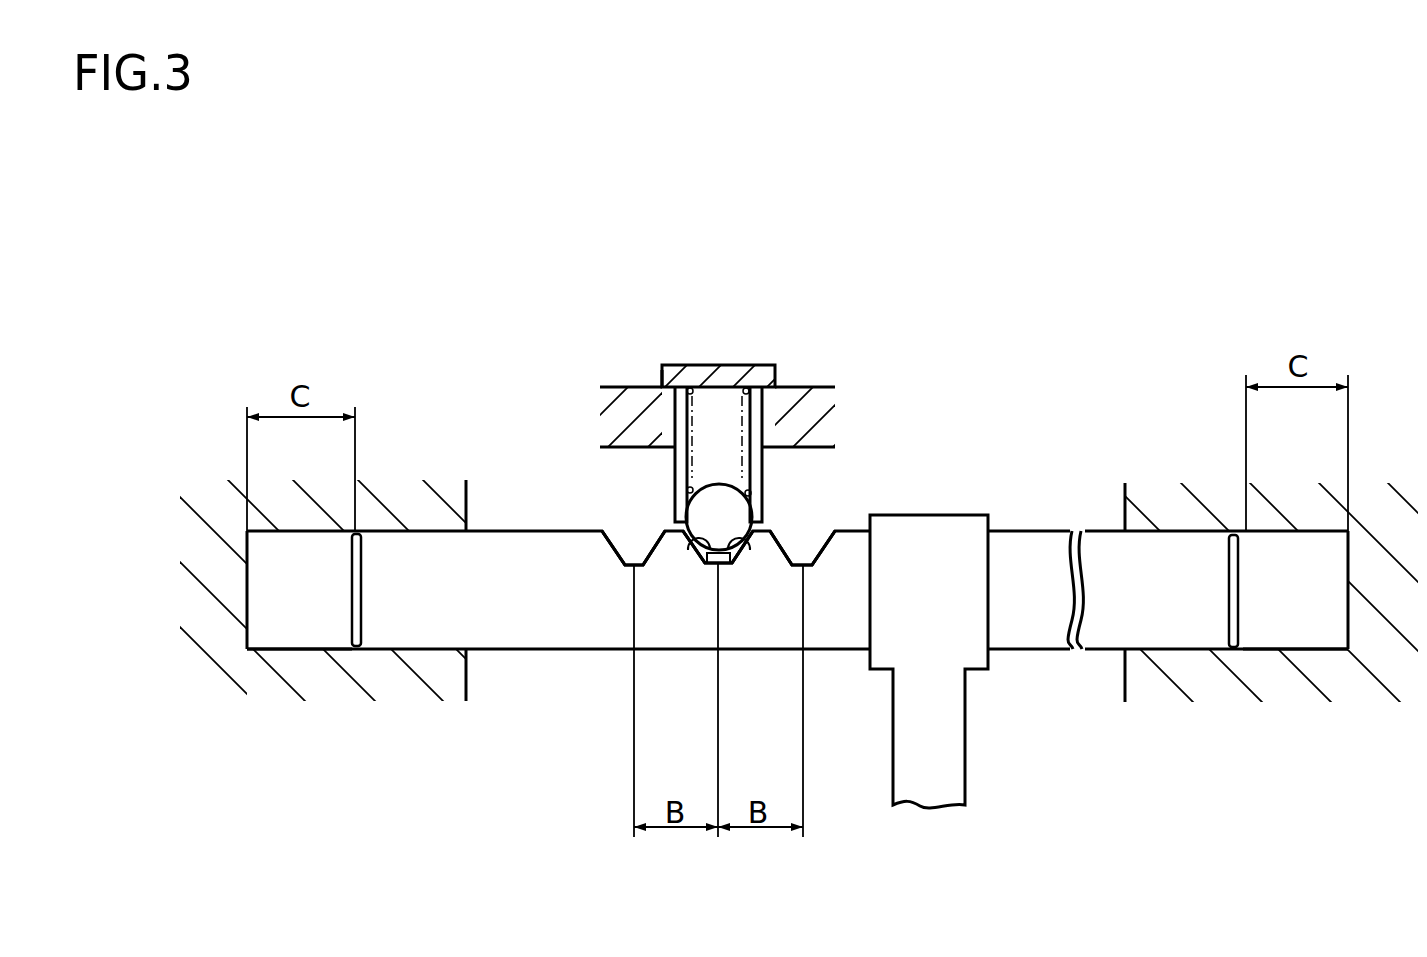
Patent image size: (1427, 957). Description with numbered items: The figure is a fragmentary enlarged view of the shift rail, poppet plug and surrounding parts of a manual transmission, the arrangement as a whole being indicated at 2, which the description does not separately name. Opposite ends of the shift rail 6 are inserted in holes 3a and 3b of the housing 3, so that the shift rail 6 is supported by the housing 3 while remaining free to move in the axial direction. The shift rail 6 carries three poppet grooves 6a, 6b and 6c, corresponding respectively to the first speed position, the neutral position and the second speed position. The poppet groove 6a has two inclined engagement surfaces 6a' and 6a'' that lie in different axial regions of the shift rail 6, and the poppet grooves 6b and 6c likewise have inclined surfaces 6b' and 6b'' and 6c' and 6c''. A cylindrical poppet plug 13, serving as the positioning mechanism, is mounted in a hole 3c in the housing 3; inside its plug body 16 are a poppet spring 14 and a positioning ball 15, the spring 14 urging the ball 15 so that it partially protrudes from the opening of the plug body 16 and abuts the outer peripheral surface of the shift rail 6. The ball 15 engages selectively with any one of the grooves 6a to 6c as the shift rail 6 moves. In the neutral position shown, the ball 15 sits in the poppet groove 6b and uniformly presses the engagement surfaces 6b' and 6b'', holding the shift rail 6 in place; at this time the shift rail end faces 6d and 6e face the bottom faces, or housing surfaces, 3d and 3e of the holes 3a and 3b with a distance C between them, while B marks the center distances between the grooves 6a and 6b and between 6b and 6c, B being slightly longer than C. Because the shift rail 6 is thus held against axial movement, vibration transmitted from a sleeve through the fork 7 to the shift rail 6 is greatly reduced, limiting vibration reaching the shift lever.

The shift detent mechanism 2 is at (1103, 303).
The housing 3 is at (1195, 425).
The hole 3a is at (1243, 650).
The hole 3b is at (287, 648).
The hole 3c is at (655, 405).
The housing surface 3d is at (1348, 620).
The housing surface 3e is at (247, 632).
The shift rail 6 is at (1047, 530).
The poppet groove 6a is at (606, 503).
The inclined surface 6a' is at (577, 563).
The inclined surface 6a'' is at (637, 513).
The poppet groove 6b is at (713, 617).
The inclined surface 6b' is at (673, 636).
The inclined surface 6b'' is at (764, 636).
The poppet groove 6c is at (854, 500).
The inclined surface 6c' is at (800, 526).
The inclined surface 6c'' is at (837, 578).
The shift rail end face 6d is at (1238, 566).
The shift rail end face 6e is at (352, 626).
The fork 7 is at (918, 780).
The poppet plug 13 is at (707, 365).
The poppet spring 14 is at (757, 386).
The positioning ball 15 is at (735, 507).
The plug body 16 is at (660, 378).